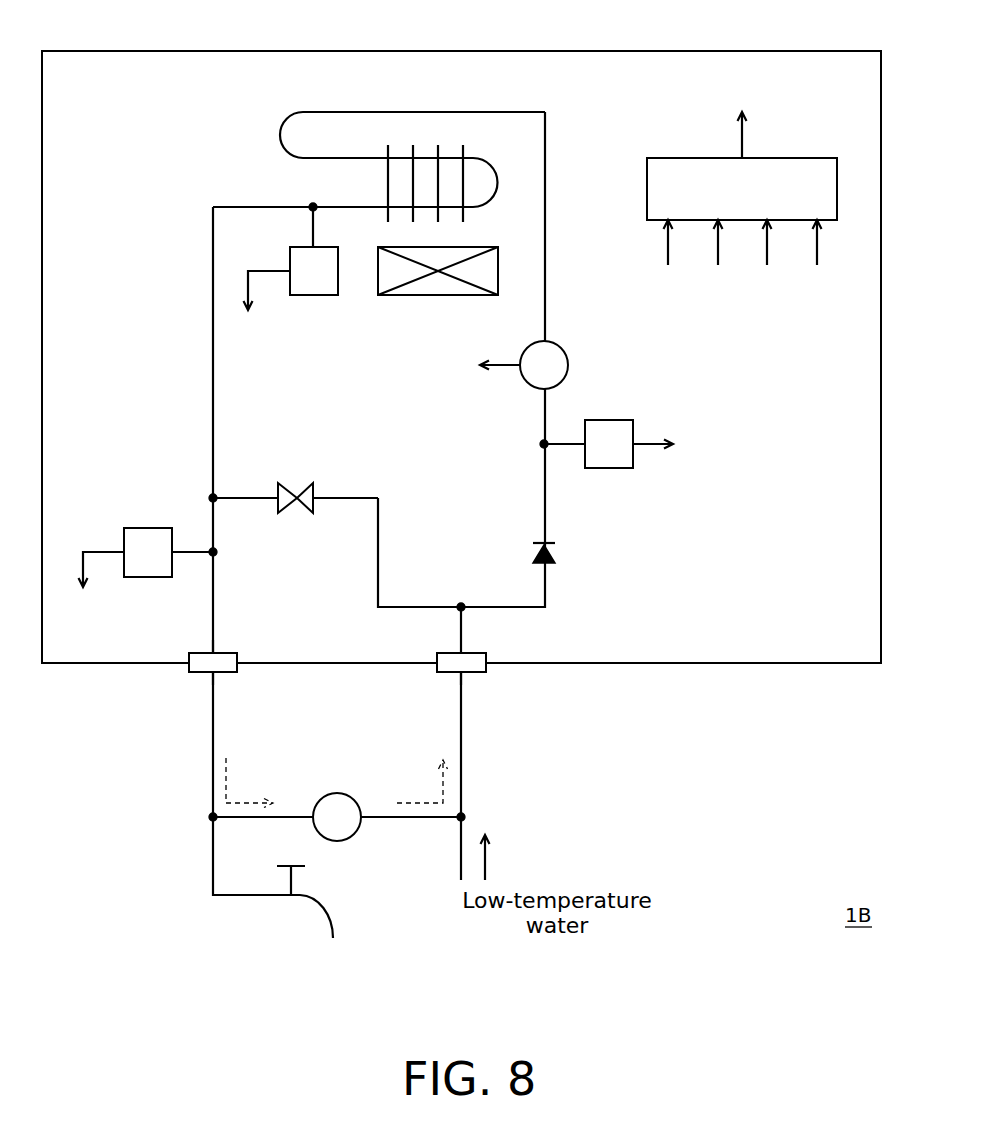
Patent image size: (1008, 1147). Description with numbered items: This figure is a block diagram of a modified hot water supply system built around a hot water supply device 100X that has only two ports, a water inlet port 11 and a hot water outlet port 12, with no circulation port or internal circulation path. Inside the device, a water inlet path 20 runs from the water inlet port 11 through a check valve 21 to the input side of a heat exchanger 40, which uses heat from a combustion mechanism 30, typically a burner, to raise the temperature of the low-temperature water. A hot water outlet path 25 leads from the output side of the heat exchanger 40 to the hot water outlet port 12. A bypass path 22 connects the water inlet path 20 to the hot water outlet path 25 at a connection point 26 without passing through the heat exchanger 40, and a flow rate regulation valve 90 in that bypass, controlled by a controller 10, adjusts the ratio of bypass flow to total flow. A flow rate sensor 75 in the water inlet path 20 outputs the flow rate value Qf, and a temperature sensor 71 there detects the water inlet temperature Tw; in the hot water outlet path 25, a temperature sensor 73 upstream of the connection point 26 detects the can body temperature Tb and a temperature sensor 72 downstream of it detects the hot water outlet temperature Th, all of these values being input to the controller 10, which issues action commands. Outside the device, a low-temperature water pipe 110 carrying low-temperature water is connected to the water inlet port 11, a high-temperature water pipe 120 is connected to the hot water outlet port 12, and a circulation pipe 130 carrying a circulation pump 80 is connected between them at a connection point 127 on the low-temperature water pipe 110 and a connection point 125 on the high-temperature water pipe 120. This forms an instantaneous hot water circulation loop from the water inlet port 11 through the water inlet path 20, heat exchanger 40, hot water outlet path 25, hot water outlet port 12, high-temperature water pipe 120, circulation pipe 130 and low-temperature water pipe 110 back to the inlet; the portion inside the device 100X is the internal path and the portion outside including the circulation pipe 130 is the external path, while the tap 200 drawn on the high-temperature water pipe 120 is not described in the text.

The hot water supply device 100X is at (802, 48).
The controller 10 is at (783, 157).
The heat exchanger 40 is at (287, 182).
The temperature sensor 73 is at (313, 297).
The combustion mechanism 30 is at (410, 297).
The hot water outlet path 25 is at (208, 360).
The water inlet path 20 is at (546, 583).
The flow rate sensor 75 is at (560, 343).
The temperature sensor 71 is at (610, 420).
The check valve 21 is at (555, 555).
The connection point 26 is at (210, 495).
The flow rate regulation valve 90 is at (307, 487).
The bypass path 22 is at (377, 555).
The temperature sensor 72 is at (148, 528).
The hot water outlet port 12 is at (227, 653).
The water inlet port 11 is at (477, 652).
The low-temperature water pipe 110 is at (458, 695).
The high-temperature water pipe 120 is at (212, 740).
The connection point 125 is at (208, 817).
The circulation pump 80 is at (338, 795).
The circulation pipe 130 is at (385, 822).
The connection point 127 is at (465, 815).
The tap 200 is at (290, 913).